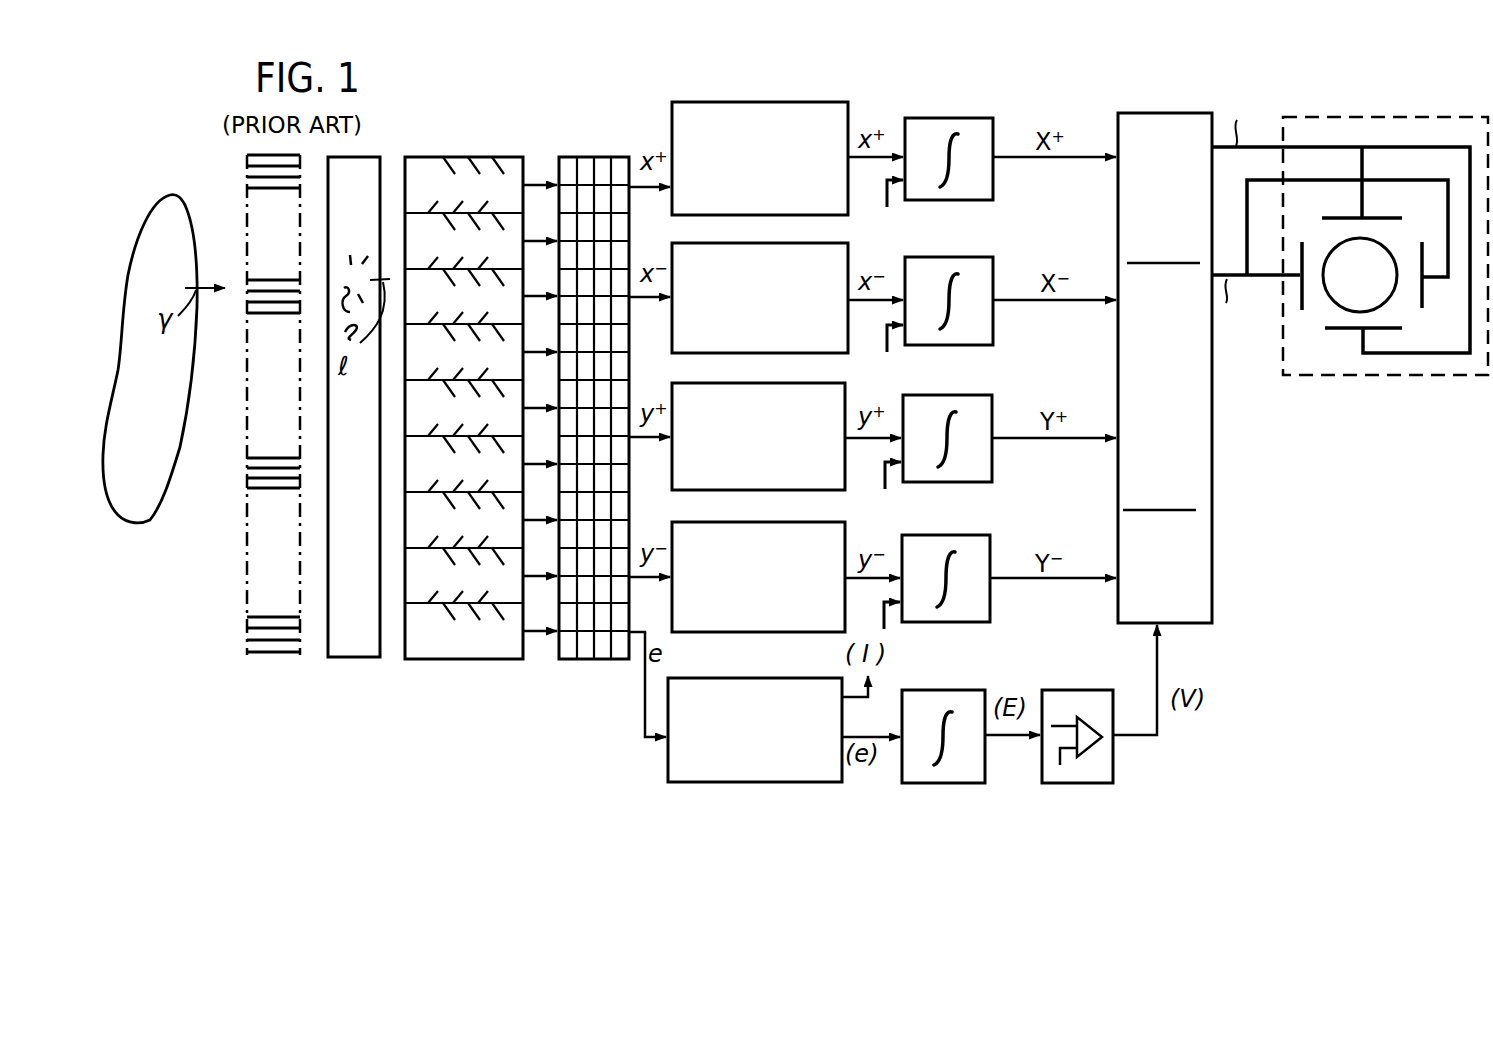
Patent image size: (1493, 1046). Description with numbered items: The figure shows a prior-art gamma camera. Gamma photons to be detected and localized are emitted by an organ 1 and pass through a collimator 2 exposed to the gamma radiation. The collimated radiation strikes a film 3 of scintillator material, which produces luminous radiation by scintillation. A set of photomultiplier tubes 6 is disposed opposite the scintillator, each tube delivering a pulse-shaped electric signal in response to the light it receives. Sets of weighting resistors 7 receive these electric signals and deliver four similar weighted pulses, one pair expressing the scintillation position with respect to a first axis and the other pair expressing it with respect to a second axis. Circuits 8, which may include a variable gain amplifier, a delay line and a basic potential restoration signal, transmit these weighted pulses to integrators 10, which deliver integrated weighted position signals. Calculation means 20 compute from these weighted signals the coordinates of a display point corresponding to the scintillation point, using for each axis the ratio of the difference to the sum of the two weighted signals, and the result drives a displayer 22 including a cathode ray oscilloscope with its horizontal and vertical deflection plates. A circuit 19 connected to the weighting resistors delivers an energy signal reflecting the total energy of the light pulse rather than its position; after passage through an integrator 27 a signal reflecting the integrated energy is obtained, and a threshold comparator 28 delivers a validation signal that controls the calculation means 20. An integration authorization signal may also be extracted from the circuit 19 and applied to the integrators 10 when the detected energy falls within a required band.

The organ 1 is at (150, 522).
The collimator 2 is at (275, 668).
The film of scintillator material 3 is at (356, 668).
The set of photomultiplier tubes 6 is at (468, 668).
The sets of weighting resistors 7 is at (581, 668).
The transmission circuits 8 is at (778, 75).
The integrators 10 is at (972, 85).
The energy circuit 19 is at (770, 780).
The calculation means 20 is at (1212, 613).
The displayer 22 is at (1408, 378).
The integrator 27 is at (955, 785).
The threshold comparator 28 is at (1082, 785).